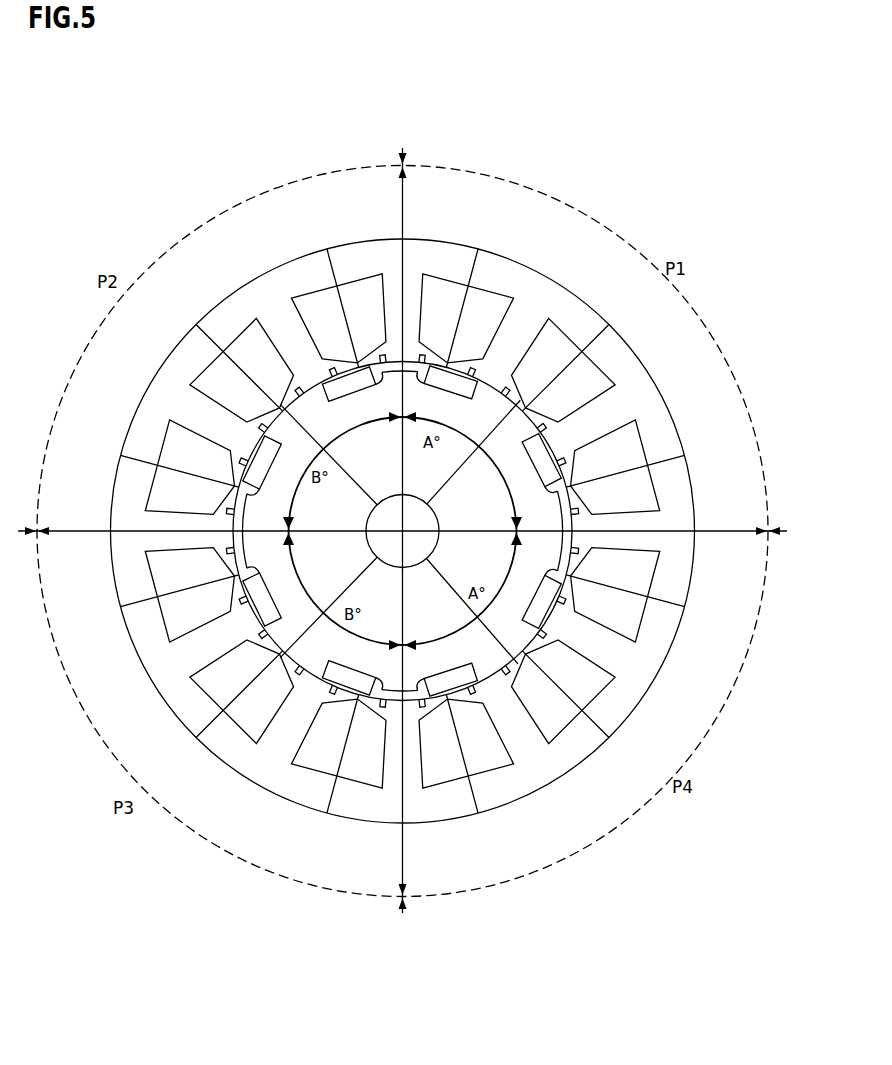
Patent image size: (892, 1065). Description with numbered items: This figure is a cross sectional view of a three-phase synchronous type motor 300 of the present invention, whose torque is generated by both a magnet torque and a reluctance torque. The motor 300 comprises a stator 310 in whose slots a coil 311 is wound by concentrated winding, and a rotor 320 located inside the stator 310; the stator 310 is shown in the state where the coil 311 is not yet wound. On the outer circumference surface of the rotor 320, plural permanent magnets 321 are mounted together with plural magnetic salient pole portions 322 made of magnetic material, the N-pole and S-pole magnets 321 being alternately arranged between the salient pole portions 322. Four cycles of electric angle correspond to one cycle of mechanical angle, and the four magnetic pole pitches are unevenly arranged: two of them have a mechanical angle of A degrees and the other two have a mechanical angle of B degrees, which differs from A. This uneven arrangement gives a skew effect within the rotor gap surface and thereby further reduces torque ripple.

The three-phase synchronous type motor 300 is at (626, 209).
The stator 310 is at (261, 796).
The coil 311 is at (631, 433).
The rotor 320 is at (489, 659).
The permanent magnets 321 is at (468, 387).
The magnetic salient pole portions 322 is at (527, 627).